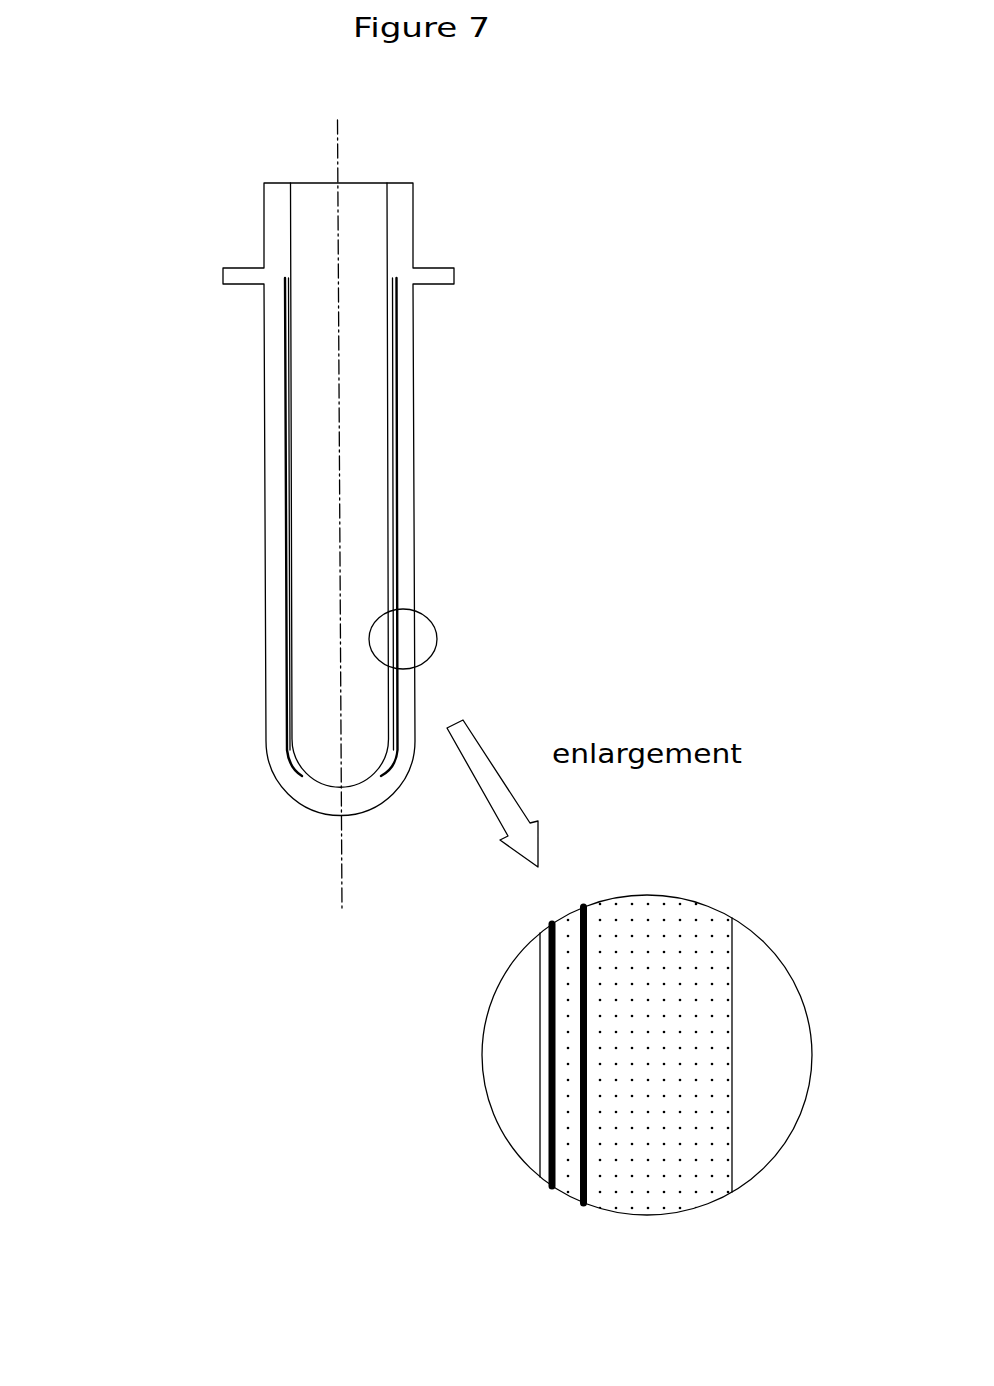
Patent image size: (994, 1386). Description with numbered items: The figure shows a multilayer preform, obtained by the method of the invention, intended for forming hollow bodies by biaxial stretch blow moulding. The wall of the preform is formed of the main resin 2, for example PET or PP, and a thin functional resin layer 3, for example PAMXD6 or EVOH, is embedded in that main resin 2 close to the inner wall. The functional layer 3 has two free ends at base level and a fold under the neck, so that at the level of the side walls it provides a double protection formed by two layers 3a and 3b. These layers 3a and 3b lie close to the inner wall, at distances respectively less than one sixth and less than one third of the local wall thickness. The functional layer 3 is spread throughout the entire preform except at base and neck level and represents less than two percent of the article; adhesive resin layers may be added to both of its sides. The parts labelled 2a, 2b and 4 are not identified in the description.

The main resin 2 is at (272, 477).
The inner wall of tube 2a is at (550, 938).
The outer wall of tube 2b is at (688, 1032).
The functional resin layer 3 is at (287, 463).
The functional layer portion 3a is at (551, 1000).
The functional layer portion 3b is at (583, 1138).
The gap 4 is at (332, 800).